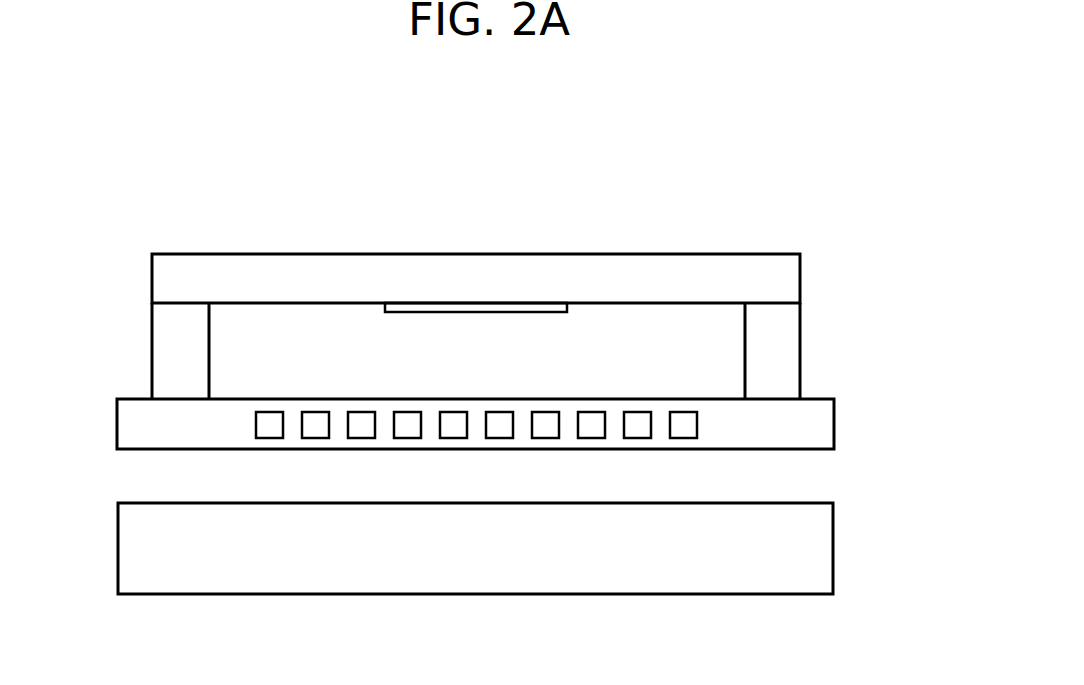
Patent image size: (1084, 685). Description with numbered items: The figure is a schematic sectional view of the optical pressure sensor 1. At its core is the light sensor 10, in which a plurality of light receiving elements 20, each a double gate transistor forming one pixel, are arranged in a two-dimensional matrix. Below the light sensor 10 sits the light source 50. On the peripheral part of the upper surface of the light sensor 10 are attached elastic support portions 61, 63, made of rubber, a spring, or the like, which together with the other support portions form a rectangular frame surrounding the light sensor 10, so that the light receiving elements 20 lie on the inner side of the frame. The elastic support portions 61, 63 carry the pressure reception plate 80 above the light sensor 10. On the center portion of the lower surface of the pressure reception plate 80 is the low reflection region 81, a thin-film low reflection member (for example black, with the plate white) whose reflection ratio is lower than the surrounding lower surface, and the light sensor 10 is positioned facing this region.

The optical pressure sensor 1 is at (170, 185).
The light sensor 10 is at (820, 426).
The light receiving element 20 is at (450, 432).
The light source 50 is at (820, 555).
The elastic support portion 61 is at (788, 352).
The elastic support portion 63 is at (167, 348).
The pressure reception plate 80 is at (788, 275).
The low reflection region 81 is at (448, 307).